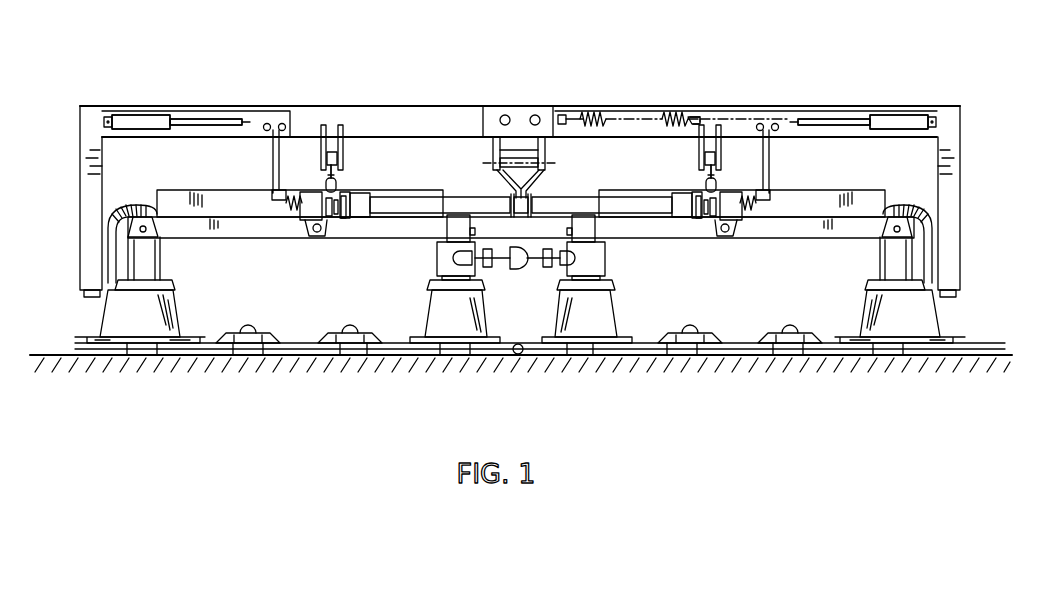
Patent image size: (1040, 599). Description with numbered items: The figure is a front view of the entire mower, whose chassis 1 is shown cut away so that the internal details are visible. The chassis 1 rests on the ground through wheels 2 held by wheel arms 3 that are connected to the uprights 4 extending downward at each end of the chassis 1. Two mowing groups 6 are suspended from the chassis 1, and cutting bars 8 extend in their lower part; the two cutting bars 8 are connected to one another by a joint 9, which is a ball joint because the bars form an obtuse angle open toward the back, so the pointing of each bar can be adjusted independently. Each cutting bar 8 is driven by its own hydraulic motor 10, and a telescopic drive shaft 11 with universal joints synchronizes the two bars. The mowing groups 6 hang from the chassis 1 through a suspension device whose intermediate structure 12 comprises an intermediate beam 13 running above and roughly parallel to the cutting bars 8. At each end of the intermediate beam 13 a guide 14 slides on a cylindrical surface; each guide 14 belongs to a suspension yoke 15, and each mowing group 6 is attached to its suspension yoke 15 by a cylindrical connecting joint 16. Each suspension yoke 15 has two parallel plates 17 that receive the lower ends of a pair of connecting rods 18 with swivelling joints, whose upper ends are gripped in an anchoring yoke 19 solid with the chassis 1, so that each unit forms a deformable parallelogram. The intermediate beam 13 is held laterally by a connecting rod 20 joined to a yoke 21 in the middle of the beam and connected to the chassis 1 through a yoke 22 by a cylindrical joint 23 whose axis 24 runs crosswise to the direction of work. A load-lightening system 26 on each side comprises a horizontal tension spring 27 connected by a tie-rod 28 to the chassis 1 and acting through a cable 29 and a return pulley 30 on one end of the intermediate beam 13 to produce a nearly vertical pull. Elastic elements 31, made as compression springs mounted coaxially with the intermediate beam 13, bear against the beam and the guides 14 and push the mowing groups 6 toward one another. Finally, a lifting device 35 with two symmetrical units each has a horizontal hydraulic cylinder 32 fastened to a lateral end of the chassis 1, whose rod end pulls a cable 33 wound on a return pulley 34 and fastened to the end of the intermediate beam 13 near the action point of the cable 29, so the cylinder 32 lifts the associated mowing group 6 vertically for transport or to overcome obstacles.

The chassis 1 is at (518, 103).
The wheels 2 is at (115, 250).
The wheel arms 3 is at (90, 294).
The uprights 4 is at (88, 193).
The mowing groups 6 is at (192, 284).
The cutting bars 8 is at (298, 345).
The joint 9 is at (518, 356).
The hydraulic motor 10 is at (457, 232).
The telescopic drive shaft 11 is at (517, 271).
The intermediate structure 12 is at (417, 192).
The intermediate beam 13 is at (585, 200).
The guide 14 is at (338, 183).
The suspension yoke 15 is at (310, 218).
The cylindrical connecting joint 16 is at (315, 233).
The plates 17 is at (336, 222).
The connecting rods 18 is at (342, 192).
The anchoring yoke 19 is at (328, 130).
The connecting rod 20 is at (506, 183).
The yoke 21 is at (531, 205).
The yoke 22 is at (497, 150).
The cylindrical joint 23 is at (540, 150).
The axis 24 is at (488, 163).
The load-lightening system 26 is at (693, 110).
The tension spring 27 is at (672, 152).
The tie-rod 28 is at (575, 117).
The cable 29 is at (273, 165).
The return pulley 30 is at (284, 124).
The elastic elements 31 is at (282, 204).
The hydraulic cylinder 32 is at (135, 122).
The cable 33 is at (248, 122).
The return pulley 34 is at (267, 123).
The lifting device 35 is at (182, 112).